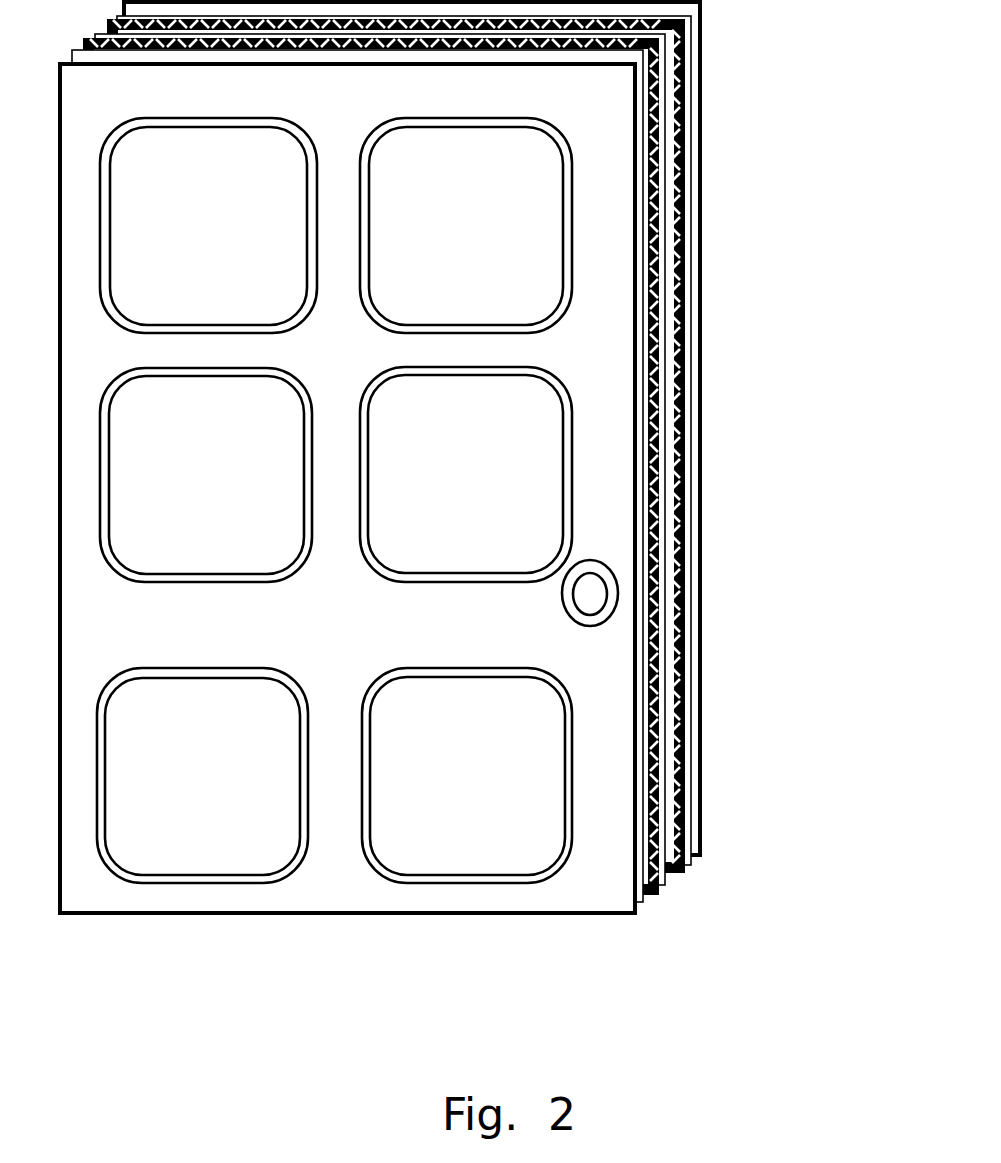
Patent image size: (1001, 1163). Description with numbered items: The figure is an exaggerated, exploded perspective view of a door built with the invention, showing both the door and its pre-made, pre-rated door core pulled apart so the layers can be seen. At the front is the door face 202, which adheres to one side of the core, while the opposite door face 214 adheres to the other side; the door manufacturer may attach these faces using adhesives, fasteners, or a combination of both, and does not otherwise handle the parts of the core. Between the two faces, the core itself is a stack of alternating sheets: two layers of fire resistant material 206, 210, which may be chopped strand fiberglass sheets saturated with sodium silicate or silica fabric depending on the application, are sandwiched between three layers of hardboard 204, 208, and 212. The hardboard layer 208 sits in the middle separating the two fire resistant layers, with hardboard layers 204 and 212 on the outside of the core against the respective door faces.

The door face 202 is at (293, 918).
The hardboard layer 204 is at (627, 882).
The layer of fire resistant material 206 is at (660, 742).
The hardboard layer 208 is at (672, 882).
The layer of fire resistant material 210 is at (685, 495).
The hardboard layer 212 is at (693, 858).
The opposite door face 214 is at (690, 260).